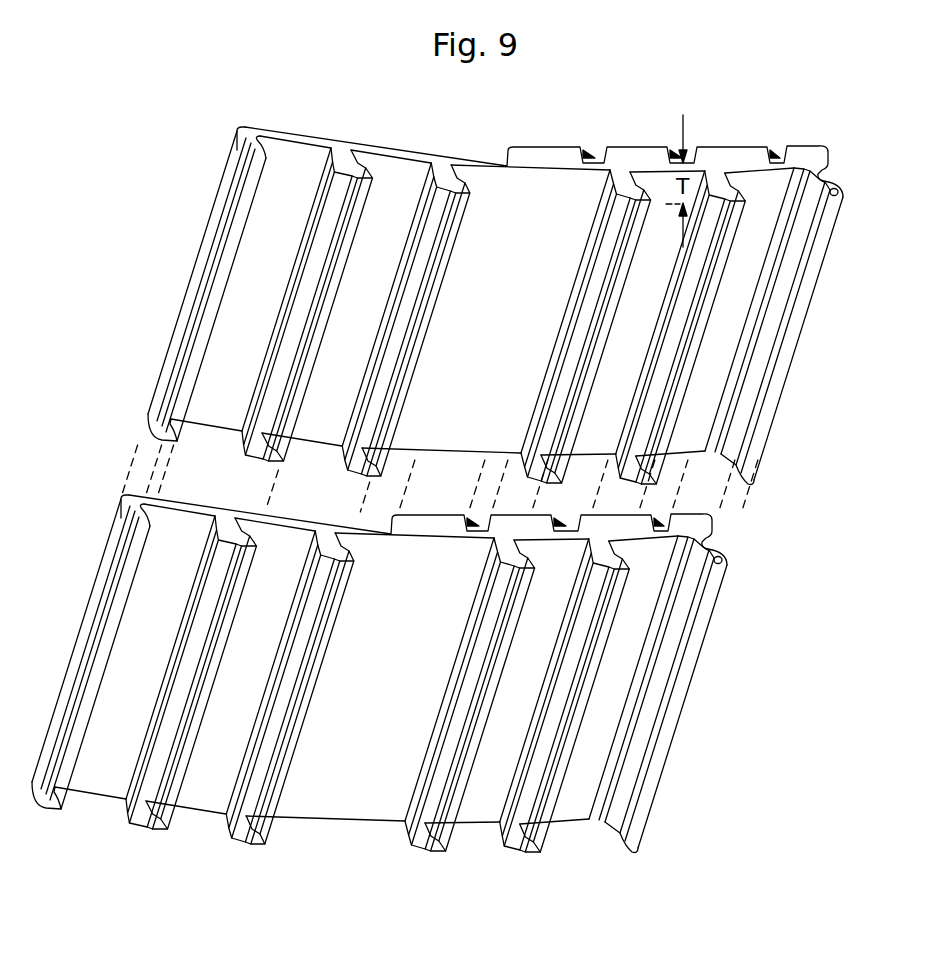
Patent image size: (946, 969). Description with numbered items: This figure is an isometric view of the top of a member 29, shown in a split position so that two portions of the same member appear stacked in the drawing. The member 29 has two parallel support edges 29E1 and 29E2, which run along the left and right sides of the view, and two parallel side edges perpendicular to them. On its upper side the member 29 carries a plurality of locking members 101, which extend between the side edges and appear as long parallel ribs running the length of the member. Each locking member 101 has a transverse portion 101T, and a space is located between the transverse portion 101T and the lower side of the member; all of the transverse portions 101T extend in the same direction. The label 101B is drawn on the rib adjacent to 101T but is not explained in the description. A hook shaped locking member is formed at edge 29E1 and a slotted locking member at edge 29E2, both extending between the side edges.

The member 29 is at (471, 504).
The support edge 29E1 is at (203, 243).
The support edge 29E2 is at (820, 293).
The locking member 101 is at (431, 504).
The transverse portion 101T is at (468, 184).
The rib bottom portion 101B is at (436, 182).